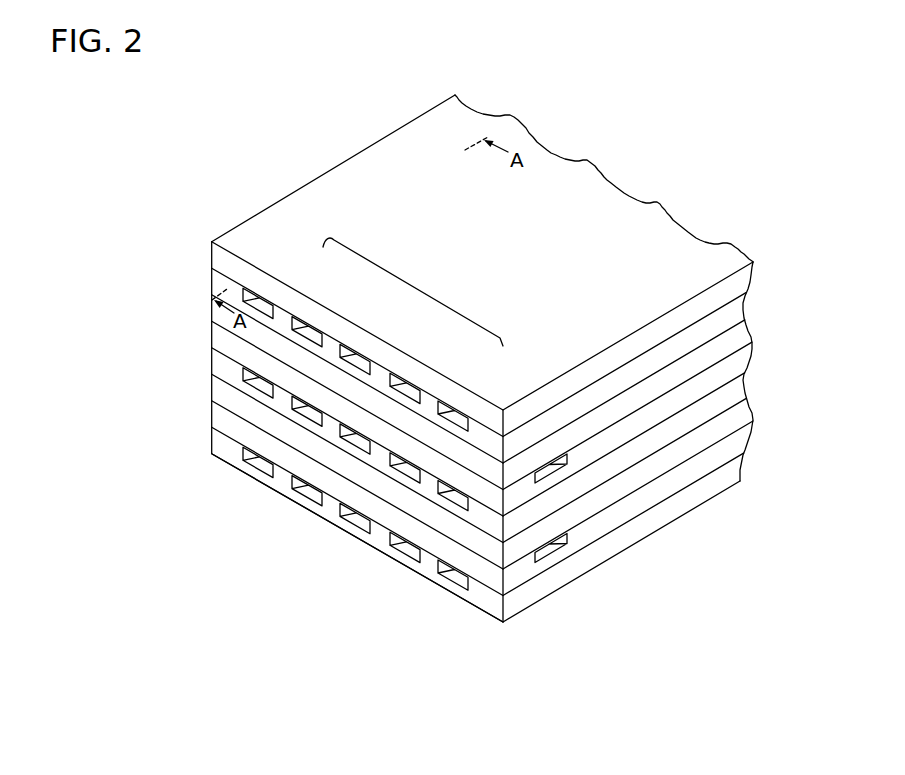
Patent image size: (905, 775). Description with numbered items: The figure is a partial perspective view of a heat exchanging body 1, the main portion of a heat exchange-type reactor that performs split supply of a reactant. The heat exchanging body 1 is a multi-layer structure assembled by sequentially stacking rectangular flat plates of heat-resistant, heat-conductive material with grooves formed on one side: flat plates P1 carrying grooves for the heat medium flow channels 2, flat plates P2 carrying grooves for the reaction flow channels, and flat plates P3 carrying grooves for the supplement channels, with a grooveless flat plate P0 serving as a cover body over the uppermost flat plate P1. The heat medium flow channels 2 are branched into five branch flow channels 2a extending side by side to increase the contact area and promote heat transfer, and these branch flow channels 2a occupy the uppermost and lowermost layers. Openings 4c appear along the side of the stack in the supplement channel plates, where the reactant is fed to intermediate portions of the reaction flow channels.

The heat exchanging body 1 is at (213, 217).
The heat medium flow channels 2 is at (416, 288).
The branch flow channels 2a is at (268, 304).
The via conductor 4c is at (553, 468).
The flat plate (cover body) P0 is at (209, 257).
The flat plate P1 is at (209, 284).
The flat plate P2 is at (209, 310).
The flat plate P3 is at (209, 336).